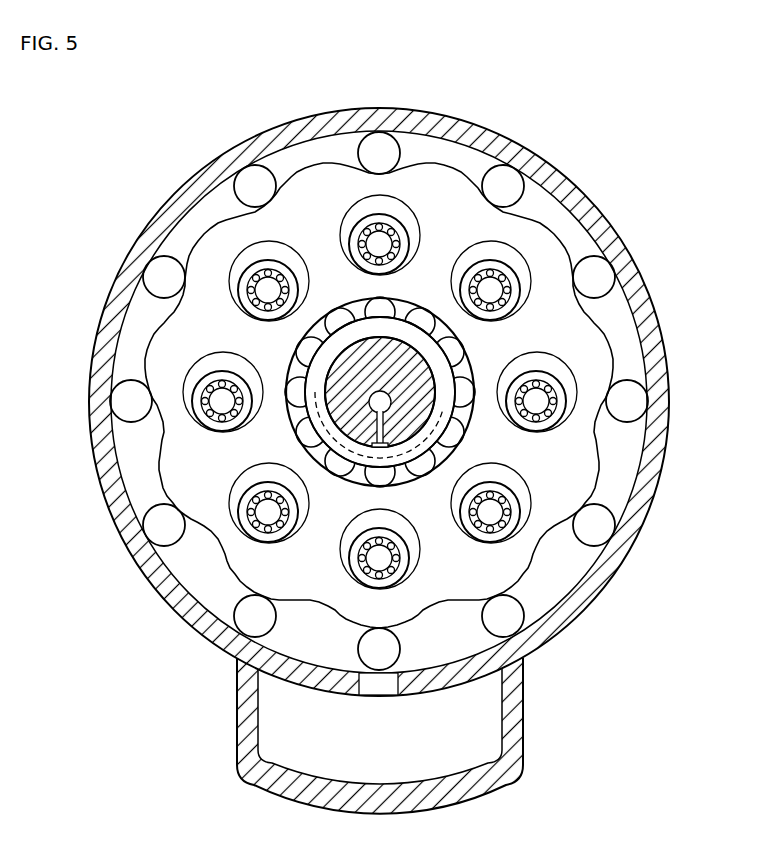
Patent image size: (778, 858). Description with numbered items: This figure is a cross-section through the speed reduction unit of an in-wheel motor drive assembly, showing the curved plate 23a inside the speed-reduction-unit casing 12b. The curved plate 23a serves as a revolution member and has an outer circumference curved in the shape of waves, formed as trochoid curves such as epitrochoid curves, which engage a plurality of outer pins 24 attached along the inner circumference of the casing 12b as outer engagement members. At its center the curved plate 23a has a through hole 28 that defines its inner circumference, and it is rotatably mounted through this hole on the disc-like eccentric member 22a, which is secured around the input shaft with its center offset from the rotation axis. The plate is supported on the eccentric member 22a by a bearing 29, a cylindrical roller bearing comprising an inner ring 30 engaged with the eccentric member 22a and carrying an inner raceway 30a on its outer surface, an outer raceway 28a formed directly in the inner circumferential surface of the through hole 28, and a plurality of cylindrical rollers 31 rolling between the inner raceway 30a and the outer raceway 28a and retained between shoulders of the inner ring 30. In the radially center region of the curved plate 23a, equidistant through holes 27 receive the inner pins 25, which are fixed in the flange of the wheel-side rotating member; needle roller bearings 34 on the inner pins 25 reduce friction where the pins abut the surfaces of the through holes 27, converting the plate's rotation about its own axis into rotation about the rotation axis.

The speed-reduction-unit casing 12b is at (568, 185).
The eccentric member 22a is at (430, 398).
The curved plate 23a is at (177, 347).
The outer pin 24 is at (168, 273).
The inner pin 25 is at (457, 324).
The through hole 27 is at (254, 247).
The through hole 28 is at (298, 367).
The outer raceway 28a is at (350, 302).
The bearing 29 is at (303, 412).
The inner ring 30 is at (322, 452).
The inner raceway 30a is at (425, 452).
The cylindrical roller 31 is at (450, 347).
The needle roller bearing 34 is at (545, 385).